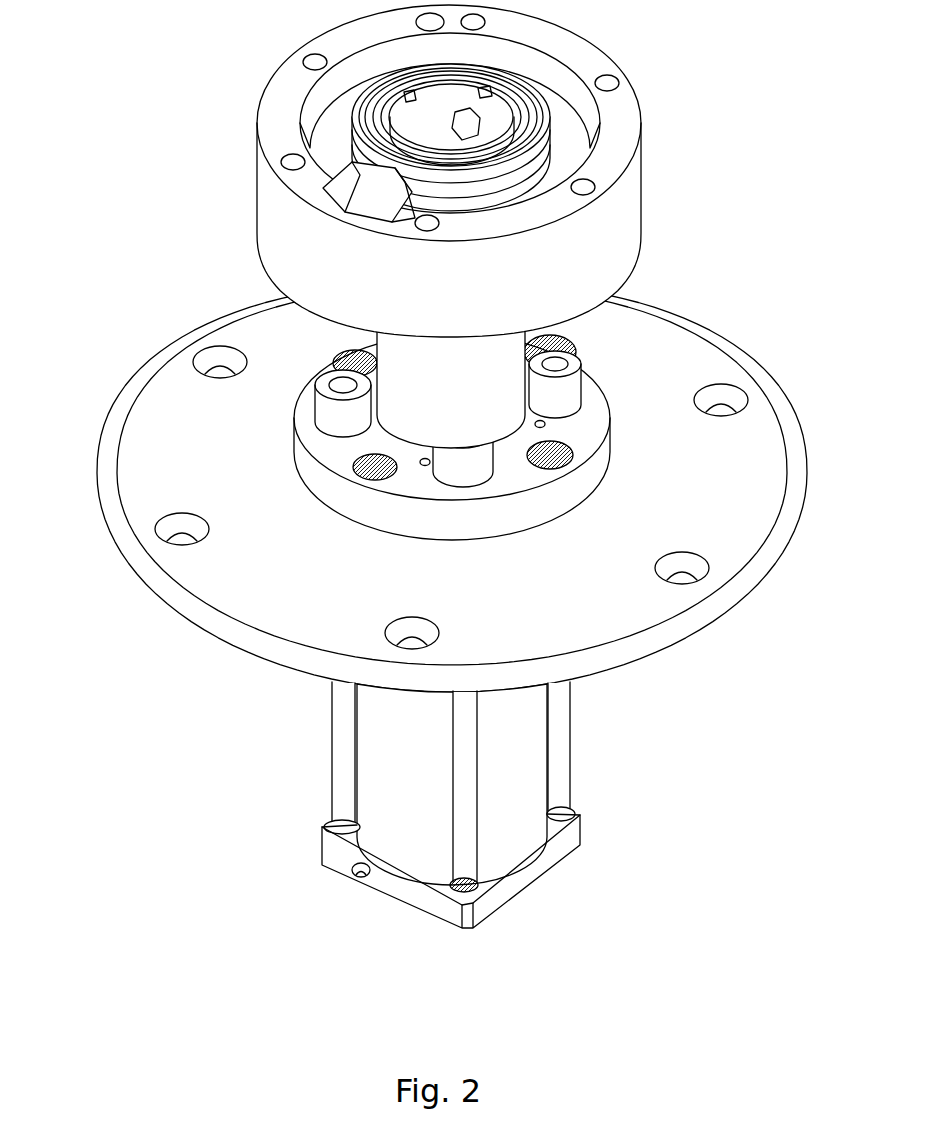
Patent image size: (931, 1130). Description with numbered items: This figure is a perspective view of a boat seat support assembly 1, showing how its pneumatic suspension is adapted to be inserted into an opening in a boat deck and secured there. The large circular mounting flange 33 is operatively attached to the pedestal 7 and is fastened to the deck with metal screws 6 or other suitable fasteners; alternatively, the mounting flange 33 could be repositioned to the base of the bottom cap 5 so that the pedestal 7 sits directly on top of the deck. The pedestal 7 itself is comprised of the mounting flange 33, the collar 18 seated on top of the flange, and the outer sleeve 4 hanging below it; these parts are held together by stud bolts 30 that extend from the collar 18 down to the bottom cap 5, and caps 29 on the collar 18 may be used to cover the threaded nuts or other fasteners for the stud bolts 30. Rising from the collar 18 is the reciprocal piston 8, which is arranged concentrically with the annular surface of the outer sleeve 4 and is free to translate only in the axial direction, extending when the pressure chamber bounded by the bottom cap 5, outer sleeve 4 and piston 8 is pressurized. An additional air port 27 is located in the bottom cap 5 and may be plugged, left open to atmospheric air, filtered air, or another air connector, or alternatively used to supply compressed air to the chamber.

The seat support assembly 1 is at (709, 201).
The outer sleeve 4 is at (378, 748).
The bottom cap 5 is at (533, 878).
The metal screws 6 is at (213, 363).
The pedestal 7 is at (360, 805).
The piston 8 is at (387, 350).
The collar 18 is at (608, 437).
The air port 27 is at (352, 882).
The caps 29 is at (312, 405).
The stud bolts 30 is at (566, 748).
The mounting flange 33 is at (452, 486).